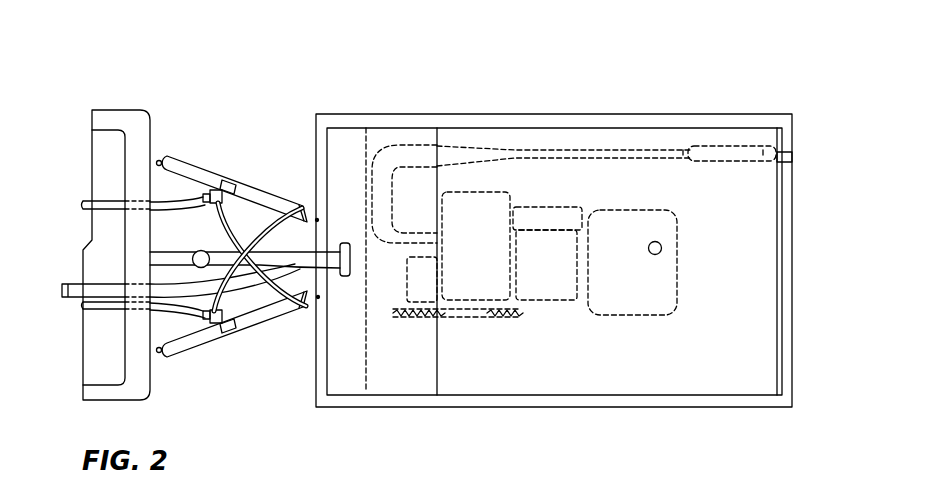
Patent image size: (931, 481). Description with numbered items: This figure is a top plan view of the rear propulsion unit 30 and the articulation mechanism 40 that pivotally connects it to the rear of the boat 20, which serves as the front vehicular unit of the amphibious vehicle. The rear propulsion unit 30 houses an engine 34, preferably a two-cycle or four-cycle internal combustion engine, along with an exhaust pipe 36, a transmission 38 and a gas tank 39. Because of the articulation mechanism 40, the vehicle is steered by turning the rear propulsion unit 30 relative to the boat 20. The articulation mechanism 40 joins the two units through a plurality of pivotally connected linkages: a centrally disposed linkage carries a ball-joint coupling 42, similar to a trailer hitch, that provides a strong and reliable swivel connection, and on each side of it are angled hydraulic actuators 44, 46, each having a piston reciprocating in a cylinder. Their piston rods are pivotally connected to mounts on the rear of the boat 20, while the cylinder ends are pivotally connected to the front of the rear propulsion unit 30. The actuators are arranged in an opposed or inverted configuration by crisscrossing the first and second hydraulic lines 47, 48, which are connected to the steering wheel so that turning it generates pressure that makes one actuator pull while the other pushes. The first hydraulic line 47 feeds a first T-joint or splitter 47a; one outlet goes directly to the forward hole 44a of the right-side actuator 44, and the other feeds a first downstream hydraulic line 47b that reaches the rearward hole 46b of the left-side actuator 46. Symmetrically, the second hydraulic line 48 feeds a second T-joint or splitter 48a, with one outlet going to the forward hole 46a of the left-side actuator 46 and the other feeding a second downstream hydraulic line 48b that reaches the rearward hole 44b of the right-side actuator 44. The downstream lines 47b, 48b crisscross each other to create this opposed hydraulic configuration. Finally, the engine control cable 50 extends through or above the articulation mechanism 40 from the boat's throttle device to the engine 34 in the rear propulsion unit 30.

The boat 20 is at (149, 96).
The articulation mechanism 40 is at (247, 90).
The rear propulsion unit 30 is at (559, 93).
The exhaust pipe 36 is at (415, 153).
The engine 34 is at (544, 318).
The transmission 38 is at (413, 320).
The gas tank 39 is at (662, 290).
The ball-joint coupling 42 is at (200, 250).
The right-side hydraulic actuator 44 is at (246, 186).
The forward hole 44a is at (229, 182).
The rearward hole 44b is at (296, 205).
The left-side hydraulic actuator 46 is at (245, 323).
The forward hole 46a is at (232, 333).
The rearward hole 46b is at (313, 312).
The first hydraulic line 47 is at (108, 200).
The first T-joint or splitter 47a is at (208, 194).
The first downstream hydraulic line 47b is at (238, 230).
The second hydraulic line 48 is at (97, 314).
The second T-joint or splitter 48a is at (206, 326).
The second downstream hydraulic line 48b is at (266, 304).
The engine control cable 50 is at (76, 298).